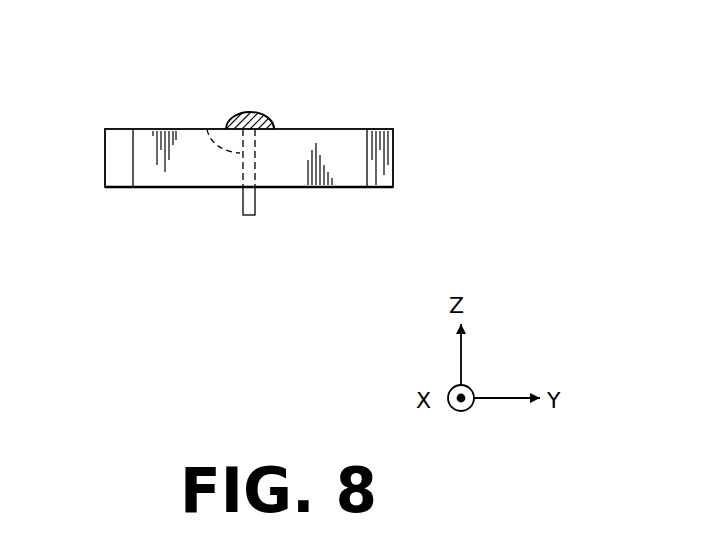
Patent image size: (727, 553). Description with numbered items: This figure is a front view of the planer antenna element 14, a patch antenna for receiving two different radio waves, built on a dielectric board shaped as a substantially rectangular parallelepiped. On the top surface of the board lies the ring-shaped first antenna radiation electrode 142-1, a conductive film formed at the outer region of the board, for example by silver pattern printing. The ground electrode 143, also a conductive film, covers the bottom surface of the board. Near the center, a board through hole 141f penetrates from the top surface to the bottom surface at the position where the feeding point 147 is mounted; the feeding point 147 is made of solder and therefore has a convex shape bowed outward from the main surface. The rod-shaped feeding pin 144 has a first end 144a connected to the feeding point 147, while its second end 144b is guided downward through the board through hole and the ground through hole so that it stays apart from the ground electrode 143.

The planer antenna element 14 is at (156, 201).
The recess 141f is at (207, 128).
The first antenna radiation electrode 142-1 is at (365, 129).
The ground electrode 143 is at (382, 188).
The feeding pin 144 is at (252, 195).
The first end 144a is at (250, 111).
The second end 144b is at (250, 216).
The feeding point 147 is at (267, 115).